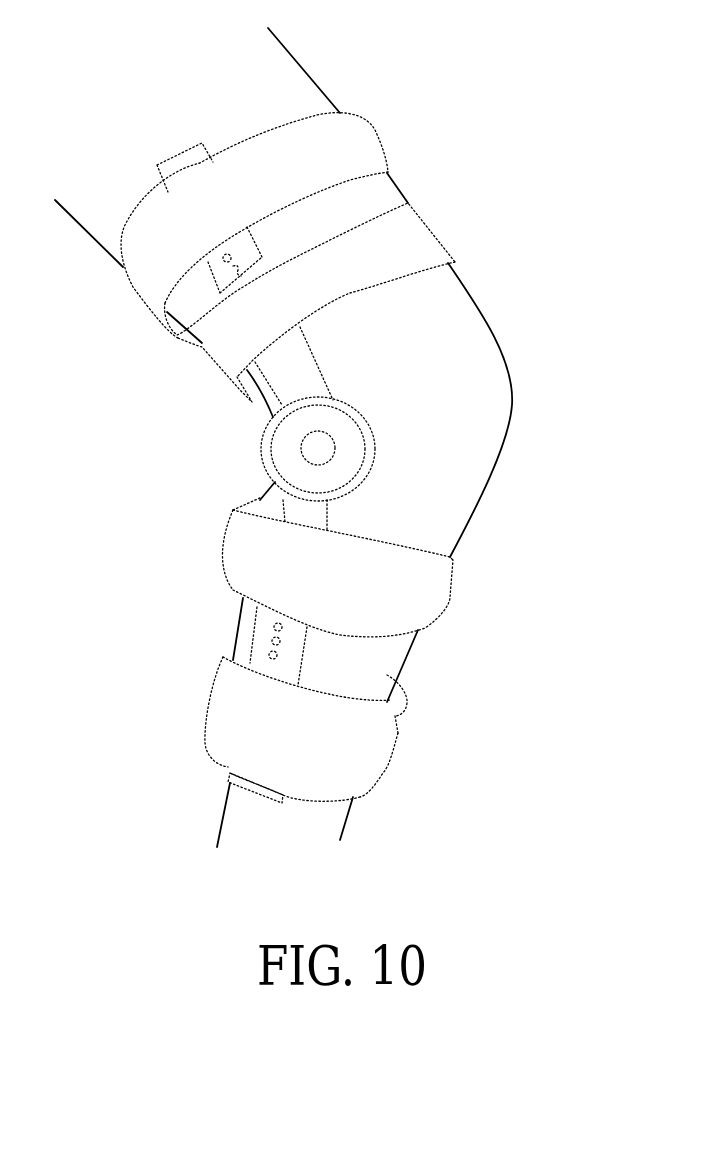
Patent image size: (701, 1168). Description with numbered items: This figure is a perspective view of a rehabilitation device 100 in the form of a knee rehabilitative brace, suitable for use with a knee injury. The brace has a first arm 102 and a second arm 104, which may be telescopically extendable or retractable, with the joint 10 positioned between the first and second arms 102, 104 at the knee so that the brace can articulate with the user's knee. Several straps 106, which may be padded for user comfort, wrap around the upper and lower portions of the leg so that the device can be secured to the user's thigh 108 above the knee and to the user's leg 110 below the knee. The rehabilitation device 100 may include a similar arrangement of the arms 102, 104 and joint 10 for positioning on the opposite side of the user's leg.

The joint 10 is at (249, 452).
The rehabilitation device 100 is at (283, 448).
The first arm 102 is at (282, 372).
The second arm 104 is at (264, 642).
The straps 106 is at (340, 147).
The thigh 108 is at (273, 85).
The leg 110 is at (381, 647).